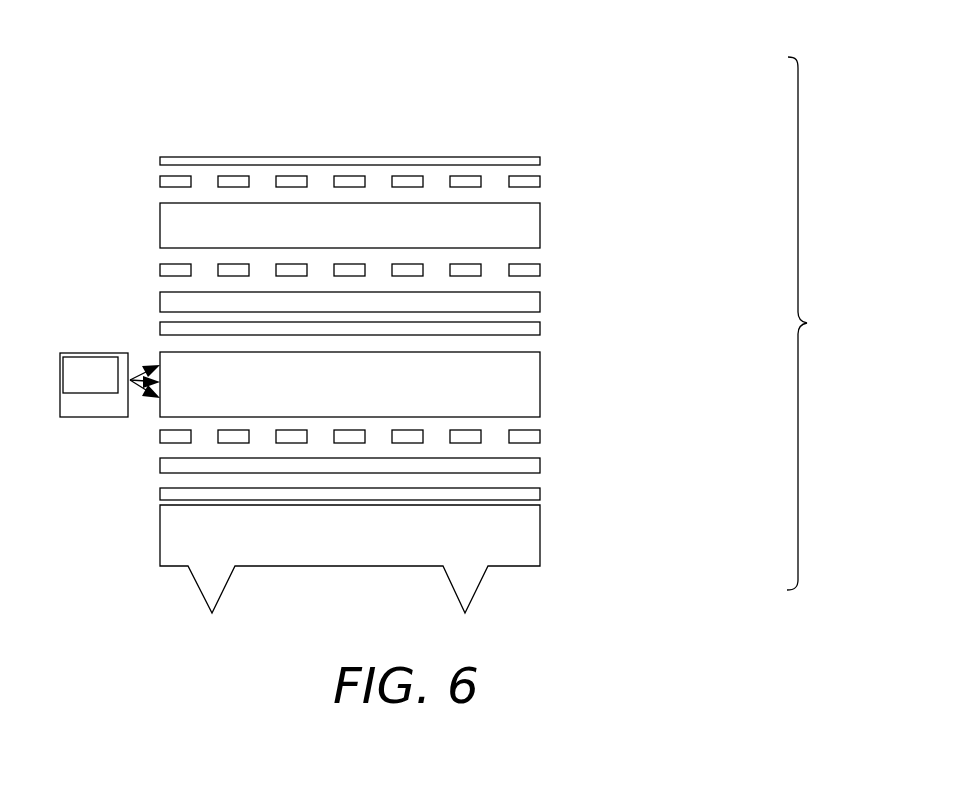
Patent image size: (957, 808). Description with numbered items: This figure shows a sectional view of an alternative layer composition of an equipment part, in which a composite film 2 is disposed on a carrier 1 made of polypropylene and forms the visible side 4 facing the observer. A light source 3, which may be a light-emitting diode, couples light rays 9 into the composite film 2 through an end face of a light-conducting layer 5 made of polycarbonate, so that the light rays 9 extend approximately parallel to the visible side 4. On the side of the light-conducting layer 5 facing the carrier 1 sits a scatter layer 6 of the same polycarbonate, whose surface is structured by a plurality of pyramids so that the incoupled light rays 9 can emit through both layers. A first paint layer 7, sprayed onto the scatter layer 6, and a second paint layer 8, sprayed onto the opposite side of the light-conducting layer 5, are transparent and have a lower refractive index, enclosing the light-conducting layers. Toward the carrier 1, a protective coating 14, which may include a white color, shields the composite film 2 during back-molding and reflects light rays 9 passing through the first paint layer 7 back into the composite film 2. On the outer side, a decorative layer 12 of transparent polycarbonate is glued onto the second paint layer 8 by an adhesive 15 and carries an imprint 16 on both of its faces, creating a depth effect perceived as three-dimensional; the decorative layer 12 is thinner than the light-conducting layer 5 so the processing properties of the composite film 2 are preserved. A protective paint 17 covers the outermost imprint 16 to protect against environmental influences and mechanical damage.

The carrier 1 is at (558, 536).
The composite film 2 is at (808, 323).
The light source 3 is at (93, 368).
The visible side 4 is at (359, 92).
The light-conducting layer 5 is at (558, 385).
The scatter layer 6 is at (558, 436).
The first paint layer 7 is at (558, 465).
The second paint layer 8 is at (558, 329).
The light rays 9 is at (138, 387).
The decorative layer 12 is at (558, 225).
The protective coating 14 is at (558, 494).
The adhesive 15 is at (558, 301).
The imprint 16 is at (558, 182).
The protective paint 17 is at (558, 161).